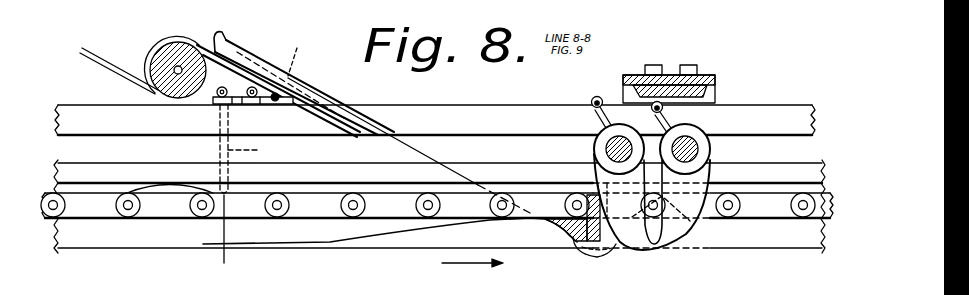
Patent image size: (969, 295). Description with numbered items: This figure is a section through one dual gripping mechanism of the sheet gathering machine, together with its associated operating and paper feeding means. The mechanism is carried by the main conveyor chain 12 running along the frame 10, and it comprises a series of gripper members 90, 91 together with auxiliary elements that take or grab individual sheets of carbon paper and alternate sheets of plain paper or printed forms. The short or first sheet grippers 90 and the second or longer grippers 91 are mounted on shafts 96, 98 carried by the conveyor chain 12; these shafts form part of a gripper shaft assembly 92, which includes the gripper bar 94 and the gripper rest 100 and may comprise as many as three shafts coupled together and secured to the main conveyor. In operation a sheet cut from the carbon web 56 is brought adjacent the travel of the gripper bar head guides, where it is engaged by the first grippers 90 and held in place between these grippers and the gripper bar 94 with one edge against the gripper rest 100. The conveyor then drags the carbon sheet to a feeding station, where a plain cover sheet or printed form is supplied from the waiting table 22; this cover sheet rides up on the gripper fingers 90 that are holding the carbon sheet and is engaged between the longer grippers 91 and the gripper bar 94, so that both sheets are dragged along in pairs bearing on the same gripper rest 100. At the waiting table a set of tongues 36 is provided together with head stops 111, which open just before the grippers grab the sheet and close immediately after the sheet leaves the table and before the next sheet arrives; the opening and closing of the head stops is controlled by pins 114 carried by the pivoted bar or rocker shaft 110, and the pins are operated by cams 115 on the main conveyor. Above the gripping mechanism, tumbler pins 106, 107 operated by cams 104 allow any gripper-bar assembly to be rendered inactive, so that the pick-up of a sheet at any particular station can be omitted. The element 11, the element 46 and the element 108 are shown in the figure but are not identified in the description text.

The frame 10 is at (430, 106).
The rail 11 is at (259, 157).
The conveyor chain 12 is at (303, 213).
The waiting table 22 is at (96, 63).
The tongues 36 is at (326, 85).
The pulley 46 is at (156, 60).
The web 56 is at (428, 223).
The first sheet grippers 90 is at (622, 234).
The second grippers 91 is at (675, 237).
The gripper shaft assembly 92 is at (582, 288).
The gripper bar 94 is at (597, 186).
The gripper shaft 96 is at (605, 149).
The gripper shaft 98 is at (708, 150).
The gripper rest 100 is at (572, 241).
The cams 104 is at (716, 96).
The tumbler pin 106 is at (600, 96).
The tumbler pin 107 is at (664, 109).
The block 108 is at (708, 78).
The rocker shaft 110 is at (240, 104).
The head stops 111 is at (277, 96).
The pins 114 is at (265, 150).
The cams 115 is at (172, 194).